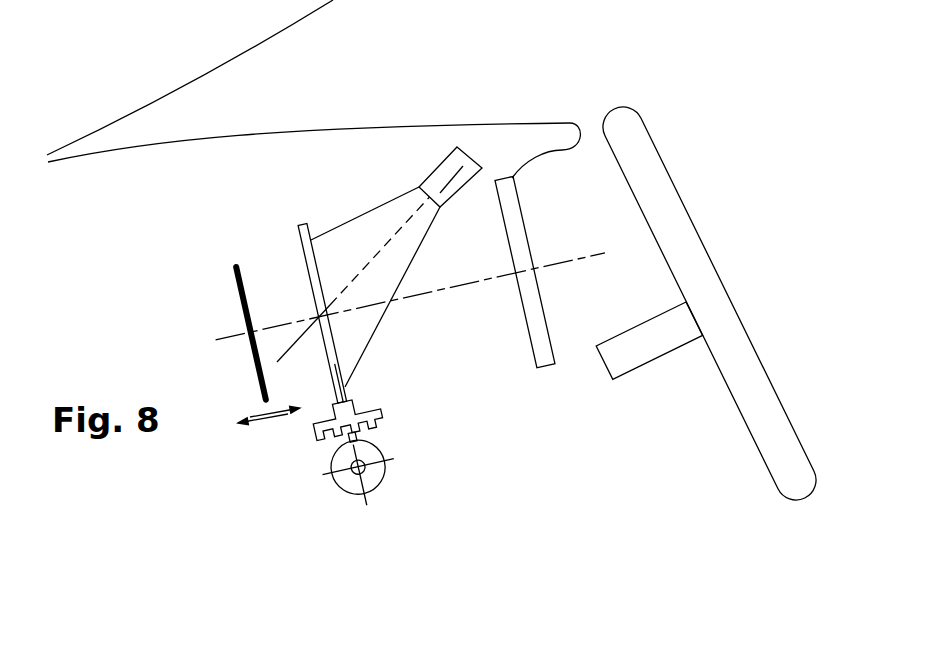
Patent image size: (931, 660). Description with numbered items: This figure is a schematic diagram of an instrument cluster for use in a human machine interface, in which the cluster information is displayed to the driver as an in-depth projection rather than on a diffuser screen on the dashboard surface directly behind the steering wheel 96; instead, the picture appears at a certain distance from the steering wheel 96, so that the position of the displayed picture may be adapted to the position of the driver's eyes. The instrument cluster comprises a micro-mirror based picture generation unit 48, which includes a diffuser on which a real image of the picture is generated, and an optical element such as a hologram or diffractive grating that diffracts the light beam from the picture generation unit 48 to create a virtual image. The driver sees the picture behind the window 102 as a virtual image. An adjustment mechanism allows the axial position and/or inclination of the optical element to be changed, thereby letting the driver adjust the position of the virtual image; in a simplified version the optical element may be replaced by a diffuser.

The picture generation unit 48 is at (447, 167).
The steering wheel 96 is at (640, 140).
The window 102 is at (547, 320).